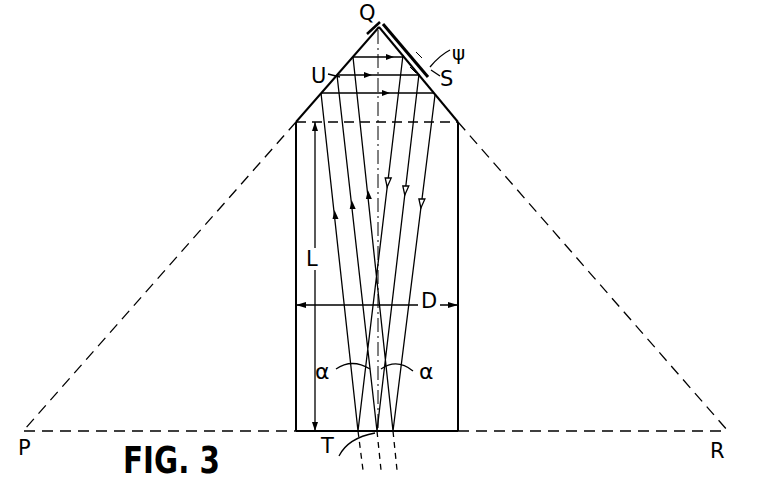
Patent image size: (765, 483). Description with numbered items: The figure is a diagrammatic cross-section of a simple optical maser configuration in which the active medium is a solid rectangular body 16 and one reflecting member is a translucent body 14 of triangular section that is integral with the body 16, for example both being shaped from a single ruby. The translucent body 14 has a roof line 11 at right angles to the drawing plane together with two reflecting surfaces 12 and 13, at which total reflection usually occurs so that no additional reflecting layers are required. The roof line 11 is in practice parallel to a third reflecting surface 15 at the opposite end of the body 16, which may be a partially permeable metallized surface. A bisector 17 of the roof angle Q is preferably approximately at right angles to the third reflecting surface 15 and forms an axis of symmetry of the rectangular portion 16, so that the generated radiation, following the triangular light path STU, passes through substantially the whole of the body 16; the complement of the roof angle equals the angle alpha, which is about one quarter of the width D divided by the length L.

The roof line 11 is at (385, 25).
The reflecting surface 12 is at (453, 108).
The reflecting surface 13 is at (304, 108).
The translucent body 14 is at (349, 84).
The third reflecting surface 15 is at (432, 431).
The solid rectangular body 16 is at (458, 333).
The bisector 17 is at (378, 163).